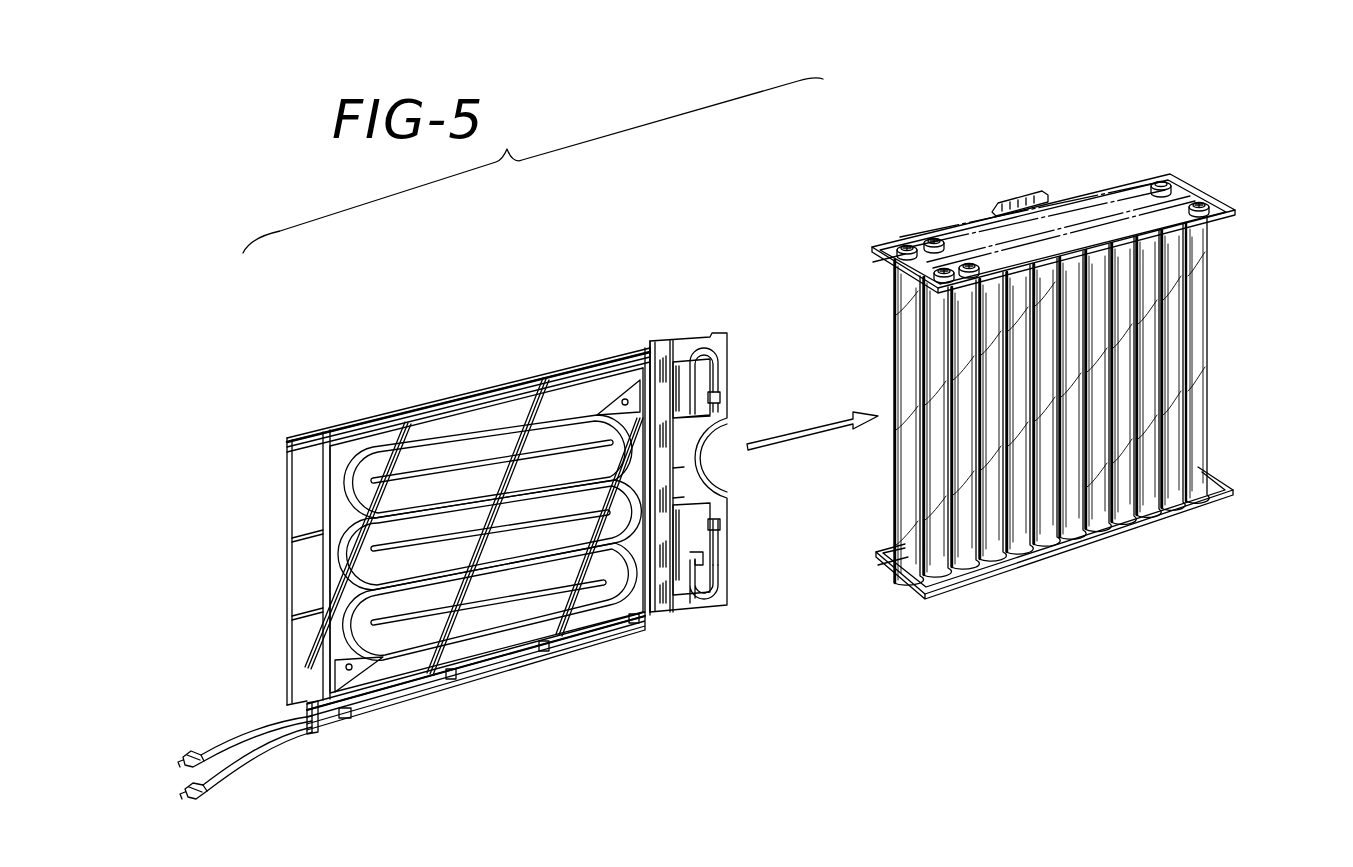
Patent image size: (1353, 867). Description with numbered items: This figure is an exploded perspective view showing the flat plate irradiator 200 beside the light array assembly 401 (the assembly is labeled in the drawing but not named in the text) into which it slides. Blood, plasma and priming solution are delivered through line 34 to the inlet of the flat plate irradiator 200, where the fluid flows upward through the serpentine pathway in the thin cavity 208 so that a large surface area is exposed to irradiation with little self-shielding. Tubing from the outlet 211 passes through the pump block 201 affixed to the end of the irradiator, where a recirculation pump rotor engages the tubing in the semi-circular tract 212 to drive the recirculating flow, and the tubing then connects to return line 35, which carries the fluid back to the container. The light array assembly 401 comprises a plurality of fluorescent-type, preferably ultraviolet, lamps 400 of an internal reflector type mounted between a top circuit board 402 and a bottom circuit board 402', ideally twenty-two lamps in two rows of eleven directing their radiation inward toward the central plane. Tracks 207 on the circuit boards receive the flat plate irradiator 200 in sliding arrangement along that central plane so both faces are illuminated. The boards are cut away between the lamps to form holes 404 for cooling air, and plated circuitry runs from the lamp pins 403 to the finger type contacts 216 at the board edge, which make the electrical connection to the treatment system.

The flat plate irradiator 200 is at (422, 384).
The pump block 201 is at (721, 338).
The cavity 208 is at (612, 592).
The outlet 211 is at (701, 599).
The semi-circular tract 212 is at (693, 463).
The line 34 is at (243, 727).
The return line 35 is at (262, 744).
The battery module 401 is at (938, 213).
The top circuit board 402 is at (1112, 229).
The bottom circuit board 402' is at (1114, 533).
The lamp pins 403 is at (1206, 205).
The holes 404 is at (890, 250).
The tracks 207 is at (905, 273).
The finger type contacts 216 is at (1035, 197).
The lamps 400 is at (1068, 485).